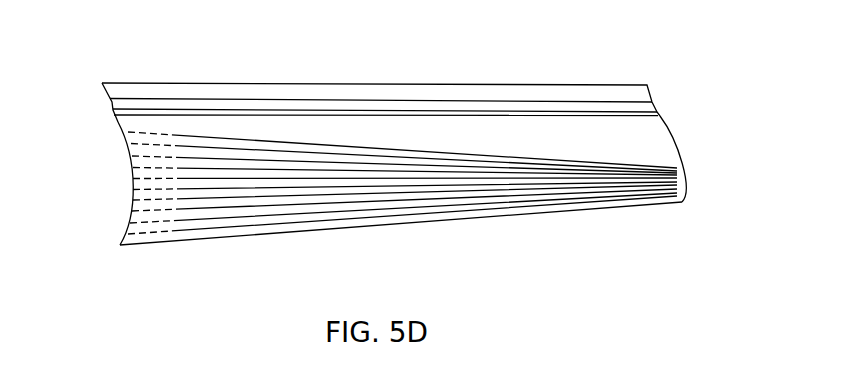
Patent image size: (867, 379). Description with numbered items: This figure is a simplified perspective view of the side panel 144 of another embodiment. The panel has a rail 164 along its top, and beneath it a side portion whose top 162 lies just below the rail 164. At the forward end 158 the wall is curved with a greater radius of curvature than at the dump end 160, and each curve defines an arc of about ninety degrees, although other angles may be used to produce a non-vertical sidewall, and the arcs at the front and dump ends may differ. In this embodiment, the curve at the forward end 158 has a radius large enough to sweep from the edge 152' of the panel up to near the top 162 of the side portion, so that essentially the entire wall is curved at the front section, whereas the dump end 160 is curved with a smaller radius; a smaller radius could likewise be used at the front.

The side panel 144 is at (598, 67).
The rail 164 is at (127, 95).
The top of the side portion 162 is at (115, 123).
The dump end 160 is at (700, 172).
The forward end 158 is at (122, 185).
The edge of the panel 152' is at (393, 253).